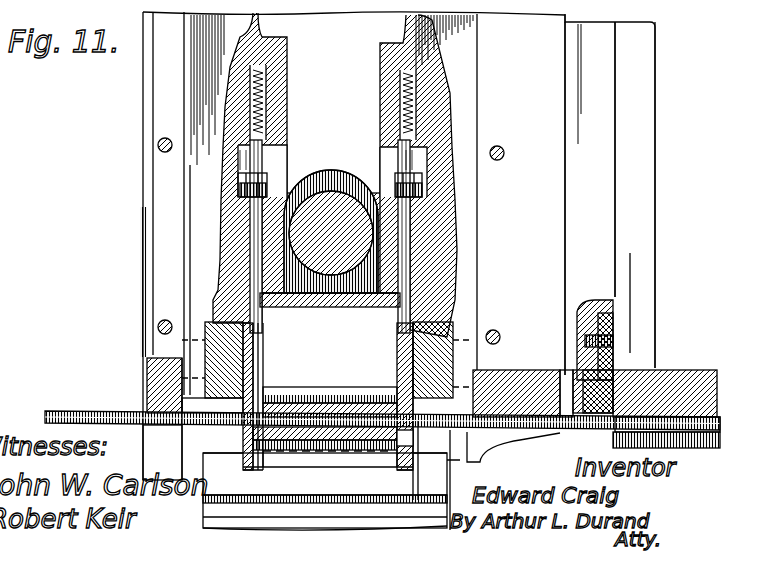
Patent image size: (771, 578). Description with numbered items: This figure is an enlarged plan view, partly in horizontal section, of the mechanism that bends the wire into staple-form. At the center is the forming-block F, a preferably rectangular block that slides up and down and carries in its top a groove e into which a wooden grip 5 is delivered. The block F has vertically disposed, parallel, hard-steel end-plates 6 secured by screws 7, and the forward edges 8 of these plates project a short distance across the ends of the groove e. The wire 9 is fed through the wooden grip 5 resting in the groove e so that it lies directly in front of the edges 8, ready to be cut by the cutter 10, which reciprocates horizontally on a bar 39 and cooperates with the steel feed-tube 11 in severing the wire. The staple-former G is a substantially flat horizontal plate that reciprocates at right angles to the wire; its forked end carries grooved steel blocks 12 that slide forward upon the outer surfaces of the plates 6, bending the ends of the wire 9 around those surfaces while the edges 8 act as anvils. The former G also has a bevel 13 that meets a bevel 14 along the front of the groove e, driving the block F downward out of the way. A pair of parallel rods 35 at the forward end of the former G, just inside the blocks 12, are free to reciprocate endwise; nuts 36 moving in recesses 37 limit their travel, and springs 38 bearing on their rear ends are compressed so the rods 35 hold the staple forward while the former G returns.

The staple-former G is at (202, 78).
The springs 38 is at (260, 94).
The recesses 37 is at (228, 161).
The rods 35 is at (257, 163).
The nuts 36 is at (267, 178).
The bar 39 is at (600, 235).
The cutter 10 is at (615, 352).
The steel feed-tube 11 is at (666, 396).
The wire 9 is at (196, 353).
The bevel 13 is at (349, 300).
The grooved steel blocks 12 is at (248, 347).
The edges 8 is at (253, 418).
The bevel 14 is at (296, 398).
The wooden grip 5 is at (339, 403).
The screws 7 is at (352, 463).
The end-plates 6 is at (243, 470).
The groove e is at (414, 437).
The forming-block F is at (330, 490).